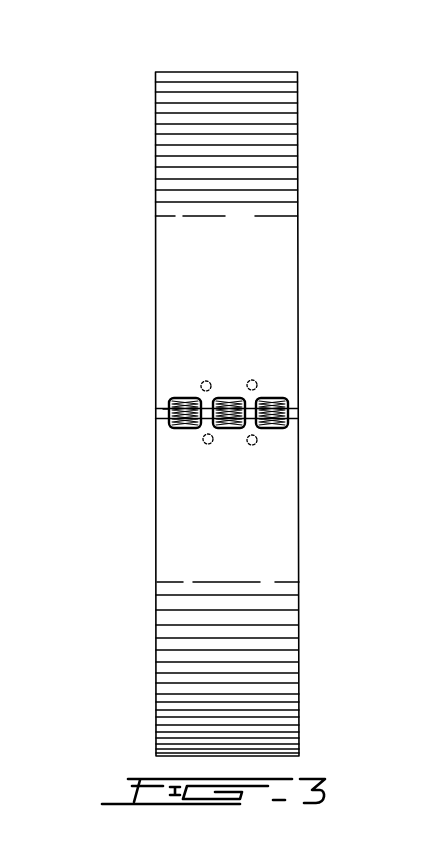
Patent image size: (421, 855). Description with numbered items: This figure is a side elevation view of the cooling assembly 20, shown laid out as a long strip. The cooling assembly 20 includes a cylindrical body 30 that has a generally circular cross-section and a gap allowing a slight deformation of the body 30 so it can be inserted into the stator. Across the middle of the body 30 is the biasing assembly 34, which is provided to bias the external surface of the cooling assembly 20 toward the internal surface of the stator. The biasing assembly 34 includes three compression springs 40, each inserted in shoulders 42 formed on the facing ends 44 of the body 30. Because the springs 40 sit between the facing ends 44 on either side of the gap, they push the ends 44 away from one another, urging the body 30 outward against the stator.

The cooling assembly 20 is at (118, 146).
The cylindrical body 30 is at (272, 137).
The biasing assembly 34 is at (302, 411).
The compression springs 40 is at (186, 398).
The shoulders 42 is at (169, 411).
The facing ends 44 is at (206, 431).